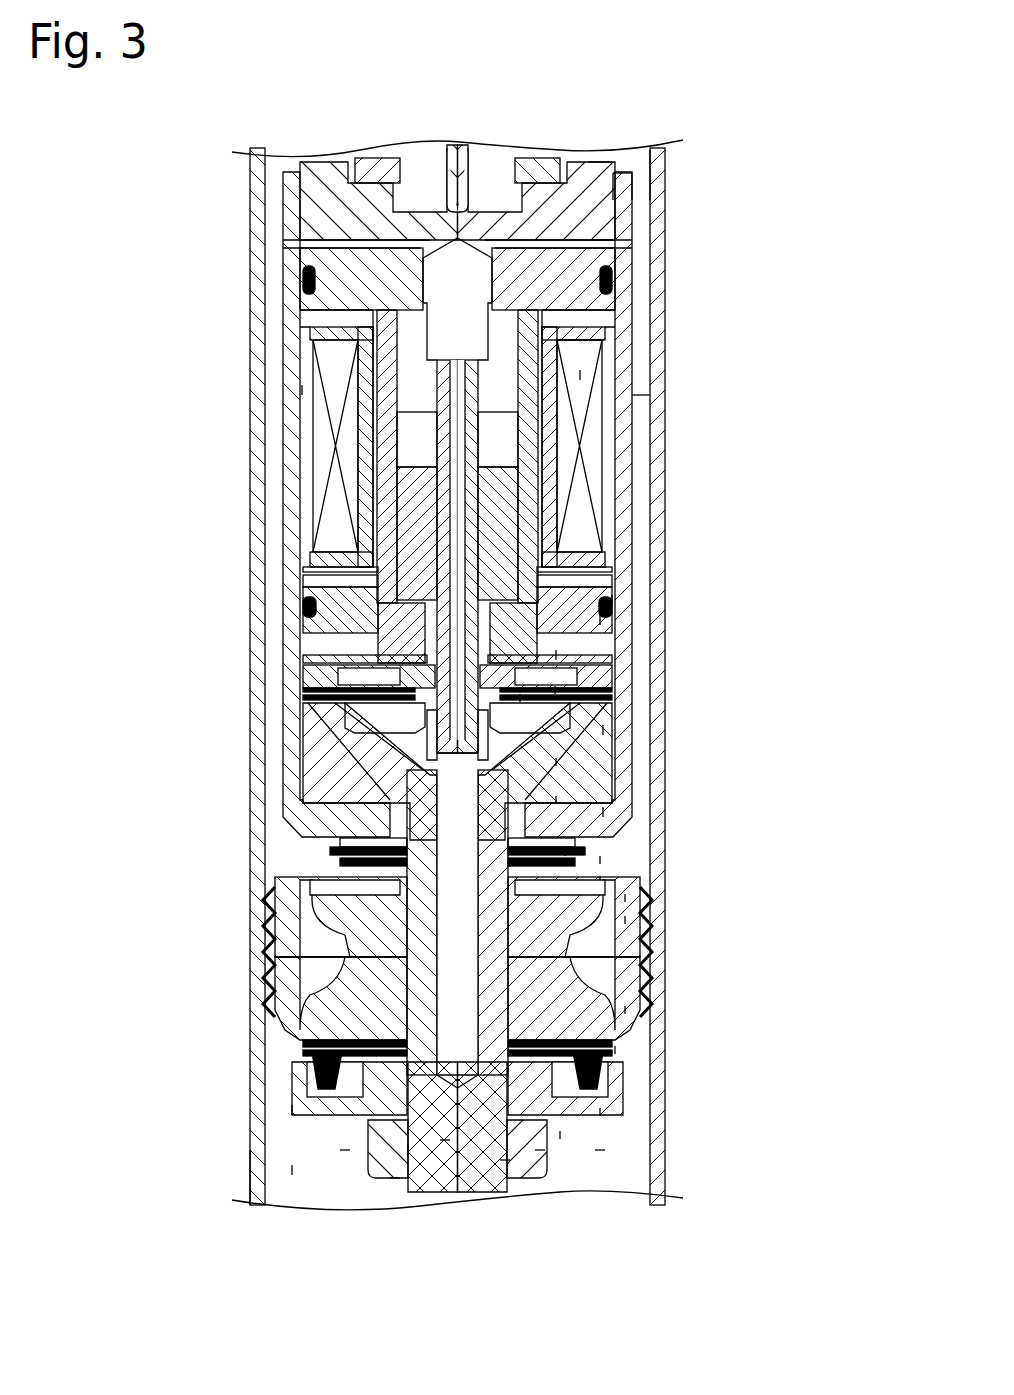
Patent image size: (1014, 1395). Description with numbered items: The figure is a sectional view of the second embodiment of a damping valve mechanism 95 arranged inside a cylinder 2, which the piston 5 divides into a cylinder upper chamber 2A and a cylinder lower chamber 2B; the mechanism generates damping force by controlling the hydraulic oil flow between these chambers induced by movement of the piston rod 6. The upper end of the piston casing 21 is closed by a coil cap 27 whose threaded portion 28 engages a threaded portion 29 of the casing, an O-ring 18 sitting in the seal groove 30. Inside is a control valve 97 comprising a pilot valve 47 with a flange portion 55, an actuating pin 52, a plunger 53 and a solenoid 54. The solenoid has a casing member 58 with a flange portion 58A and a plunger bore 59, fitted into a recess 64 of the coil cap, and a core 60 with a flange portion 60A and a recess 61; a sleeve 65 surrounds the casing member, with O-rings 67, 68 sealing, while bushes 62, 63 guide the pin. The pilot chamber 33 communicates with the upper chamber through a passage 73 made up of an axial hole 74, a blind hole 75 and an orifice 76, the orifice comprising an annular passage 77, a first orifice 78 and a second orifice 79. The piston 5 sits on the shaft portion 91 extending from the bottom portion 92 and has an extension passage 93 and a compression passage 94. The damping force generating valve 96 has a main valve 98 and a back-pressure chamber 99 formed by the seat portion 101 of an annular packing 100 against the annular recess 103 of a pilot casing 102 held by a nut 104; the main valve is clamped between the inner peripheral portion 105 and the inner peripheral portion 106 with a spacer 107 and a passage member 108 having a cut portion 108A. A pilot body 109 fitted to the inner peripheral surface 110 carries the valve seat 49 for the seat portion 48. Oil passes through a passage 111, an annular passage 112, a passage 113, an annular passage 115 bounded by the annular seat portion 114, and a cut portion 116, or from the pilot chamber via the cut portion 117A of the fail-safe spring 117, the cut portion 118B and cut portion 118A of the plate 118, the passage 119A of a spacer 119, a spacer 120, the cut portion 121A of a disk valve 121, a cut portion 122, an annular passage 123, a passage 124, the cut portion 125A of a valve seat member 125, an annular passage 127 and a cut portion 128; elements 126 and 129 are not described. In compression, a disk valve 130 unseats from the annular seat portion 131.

The cylinder 2 is at (668, 165).
The cylinder upper chamber 2A is at (660, 150).
The cylinder lower chamber 2B is at (262, 1172).
The piston 5 is at (340, 985).
The piston rod 6 is at (540, 160).
The O-ring 18 is at (632, 285).
The piston casing 21 is at (640, 400).
The coil cap 27 is at (590, 160).
The threaded portion 28 is at (625, 185).
The threaded portion 29 is at (706, 147).
The seal groove 30 is at (612, 240).
The pilot chamber 33 is at (480, 1175).
The pilot valve 47 is at (478, 640).
The seat portion 48 is at (330, 790).
The valve seat 49 is at (340, 830).
The actuating pin 52 is at (520, 445).
The plunger 53 is at (400, 490).
The solenoid 54 is at (345, 425).
The flange portion 55 is at (478, 748).
The casing member 58 is at (335, 455).
The flange portion 58A is at (606, 330).
The plunger bore 59 is at (540, 420).
The core 60 is at (605, 575).
The flange portion 60A is at (615, 600).
The recess 61 is at (300, 530).
The bush 62 is at (300, 390).
The bush 63 is at (310, 603).
The recess 64 is at (632, 198).
The sleeve 65 is at (603, 490).
The O-ring 67 is at (580, 375).
The O-ring 68 is at (603, 555).
The passage 73 is at (462, 250).
The axial hole 74 is at (345, 300).
The blind hole 75 is at (330, 315).
The orifice 76 is at (375, 160).
The annular passage 77 is at (330, 175).
The first orifice 78 is at (305, 272).
The second orifice 79 is at (345, 200).
The shaft portion 91 is at (460, 1100).
The bottom portion 92 is at (508, 830).
The extension passage 93 is at (300, 925).
The compression passage 94 is at (605, 985).
The damping valve mechanism 95 is at (270, 890).
The damping force generating valve 96 is at (290, 1110).
The control valve 97 is at (603, 730).
The main valve 98 is at (615, 1050).
The back-pressure chamber 99 is at (600, 1150).
The annular packing 100 is at (295, 1170).
The seat portion 101 is at (300, 1140).
The pilot casing 102 is at (600, 1112).
The annular recess 103 is at (560, 1135).
The nut 104 is at (412, 1150).
The inner peripheral portion 105 is at (625, 1010).
The inner peripheral portion 106 is at (540, 1150).
The spacer 107 is at (345, 1150).
The passage member 108 is at (385, 1160).
The cut portion 108A is at (395, 1180).
The pilot body 109 is at (560, 762).
The inner peripheral surface 110 is at (486, 716).
The passage 111 is at (505, 1160).
The annular passage 112 is at (445, 1140).
The passage 113 is at (320, 1005).
The annular seat portion 114 is at (320, 1065).
The annular passage 115 is at (300, 1040).
The cut portion 116 is at (305, 1090).
The fail-safe spring 117 is at (520, 698).
The cut portion 117A is at (330, 760).
The plate 118 is at (560, 655).
The cut portion 118A is at (330, 680).
The cut portion 118B is at (330, 640).
The spacer 119 is at (600, 620).
The passage 119A is at (320, 655).
The spacer 120 is at (340, 700).
The disk valve 121 is at (555, 690).
The cut portion 121A is at (330, 722).
The cut portion 122 is at (360, 740).
The annular passage 123 is at (360, 850).
The passage 124 is at (360, 862).
The valve seat member 125 is at (565, 852).
The cut portion 125A is at (600, 860).
The passage 126 is at (603, 812).
The annular passage 127 is at (560, 800).
The cut portion 128 is at (600, 945).
The passage 129 is at (600, 880).
The disk valve 130 is at (625, 898).
The annular seat portion 131 is at (625, 920).